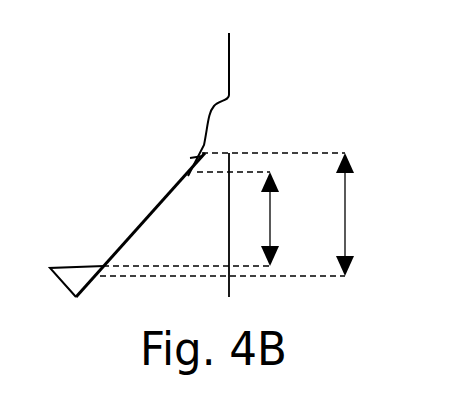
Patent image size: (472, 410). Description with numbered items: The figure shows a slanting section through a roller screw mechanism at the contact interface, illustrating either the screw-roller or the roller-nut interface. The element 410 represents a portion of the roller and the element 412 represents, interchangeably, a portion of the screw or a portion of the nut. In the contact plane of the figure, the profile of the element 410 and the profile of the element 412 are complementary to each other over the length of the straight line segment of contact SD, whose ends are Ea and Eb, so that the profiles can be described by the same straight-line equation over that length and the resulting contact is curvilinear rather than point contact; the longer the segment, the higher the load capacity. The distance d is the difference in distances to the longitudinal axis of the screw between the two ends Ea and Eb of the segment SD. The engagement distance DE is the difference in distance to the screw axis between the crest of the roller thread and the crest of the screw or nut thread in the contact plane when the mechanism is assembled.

The roller portion element 410 is at (210, 70).
The screw or nut portion element 412 is at (216, 152).
The straight line segment of contact SD is at (190, 170).
The first end of the straight line segment Ea is at (193, 155).
The second end of the straight line segment Eb is at (100, 264).
The distance between ends d is at (277, 219).
The engagement distance DE is at (363, 214).